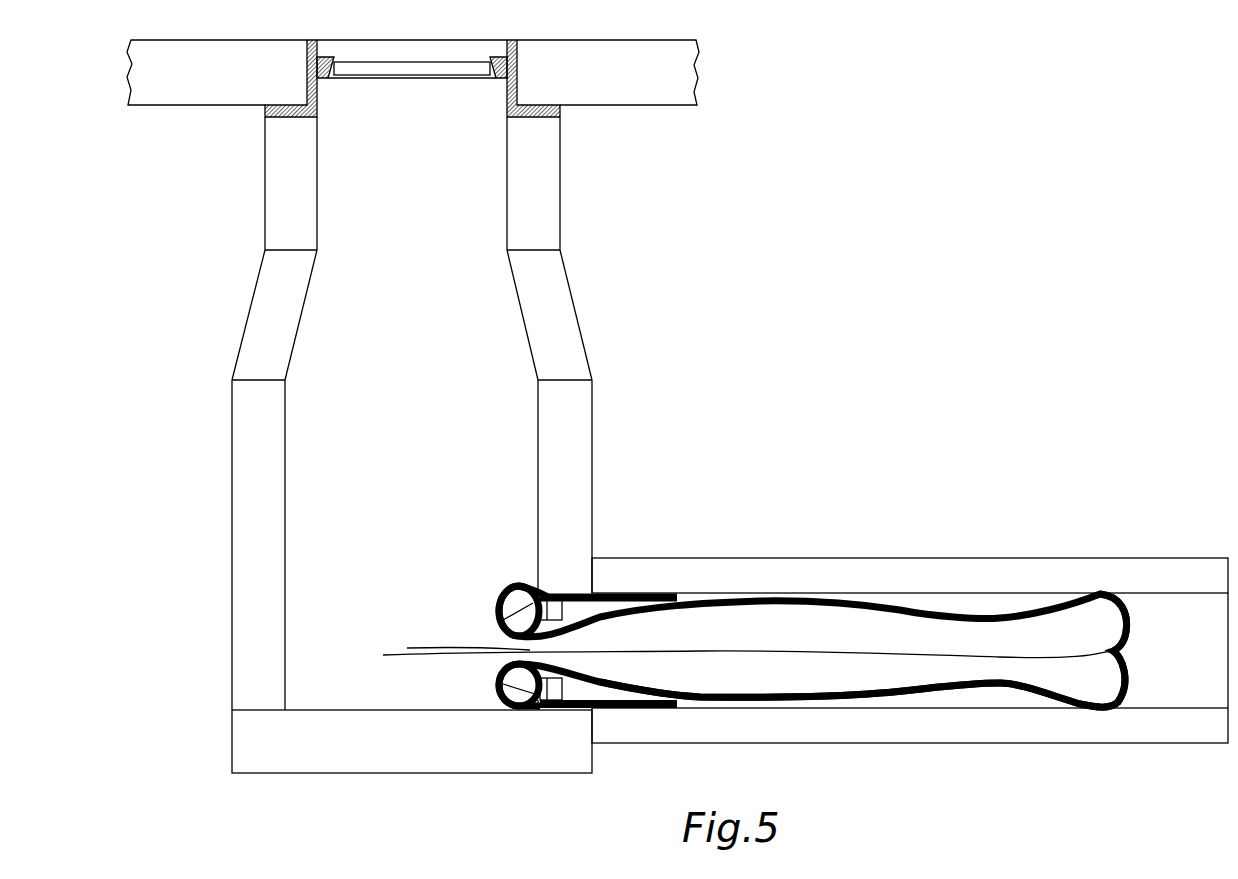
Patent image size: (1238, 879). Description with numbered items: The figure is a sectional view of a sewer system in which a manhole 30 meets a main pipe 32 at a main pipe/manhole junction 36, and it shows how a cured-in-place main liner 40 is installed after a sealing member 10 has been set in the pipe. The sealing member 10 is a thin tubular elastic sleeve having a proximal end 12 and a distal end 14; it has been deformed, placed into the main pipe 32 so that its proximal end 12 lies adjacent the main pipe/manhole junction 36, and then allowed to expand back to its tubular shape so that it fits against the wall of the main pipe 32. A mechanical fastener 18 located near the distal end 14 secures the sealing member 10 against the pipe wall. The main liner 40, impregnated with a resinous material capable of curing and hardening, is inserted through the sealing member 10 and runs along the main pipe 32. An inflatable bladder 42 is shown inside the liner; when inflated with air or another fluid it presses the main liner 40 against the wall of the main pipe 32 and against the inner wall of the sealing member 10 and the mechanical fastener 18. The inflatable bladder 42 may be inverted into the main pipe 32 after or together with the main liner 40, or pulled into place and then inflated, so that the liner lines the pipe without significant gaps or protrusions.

The sealing member 10 is at (817, 620).
The proximal end 12 is at (497, 682).
The distal end 14 is at (682, 694).
The mechanical fastener 18 is at (563, 621).
The manhole 30 is at (578, 318).
The main pipe 32 is at (817, 556).
The main pipe/manhole junction 36 is at (497, 618).
The main liner 40 is at (1130, 621).
The inflatable bladder 42 is at (1117, 673).